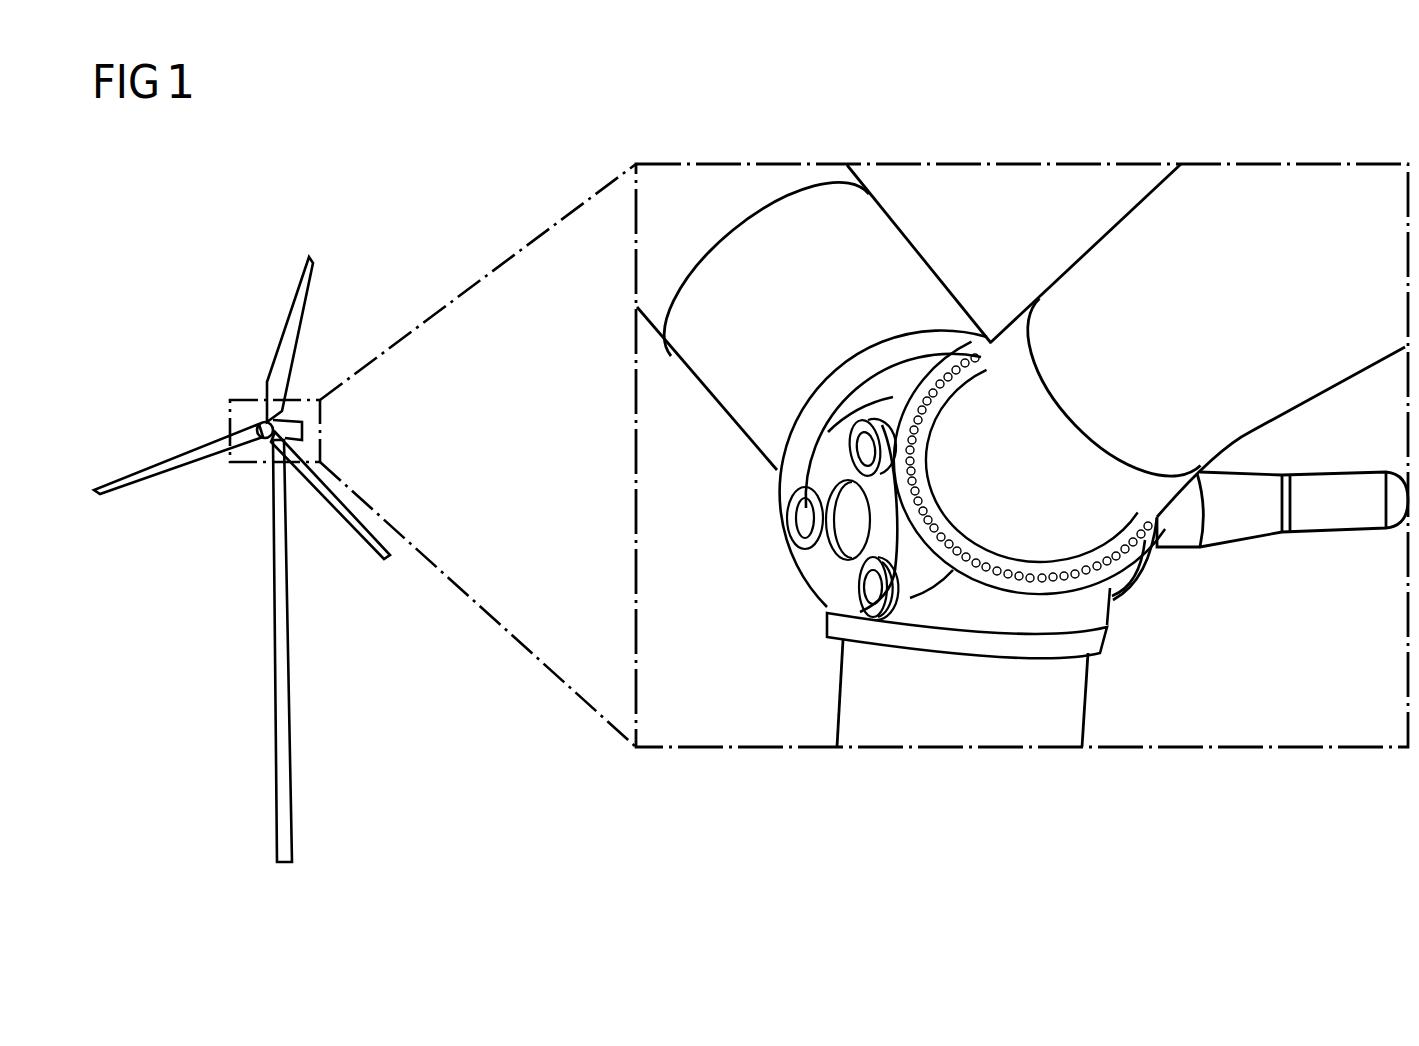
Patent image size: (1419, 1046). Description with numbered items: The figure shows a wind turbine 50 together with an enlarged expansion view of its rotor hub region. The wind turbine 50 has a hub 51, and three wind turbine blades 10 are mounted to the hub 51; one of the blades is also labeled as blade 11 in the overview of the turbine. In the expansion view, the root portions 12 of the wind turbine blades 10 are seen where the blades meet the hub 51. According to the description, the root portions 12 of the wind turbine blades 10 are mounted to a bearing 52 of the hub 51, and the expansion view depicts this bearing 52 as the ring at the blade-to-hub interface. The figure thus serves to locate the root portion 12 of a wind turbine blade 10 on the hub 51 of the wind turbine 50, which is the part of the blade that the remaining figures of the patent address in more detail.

The wind turbine blade 10 is at (803, 172).
The rotor blade 11 is at (120, 482).
The root portion 12 is at (972, 382).
The wind turbine 50 is at (186, 396).
The hub 51 is at (270, 415).
The bearing 52 is at (1032, 590).